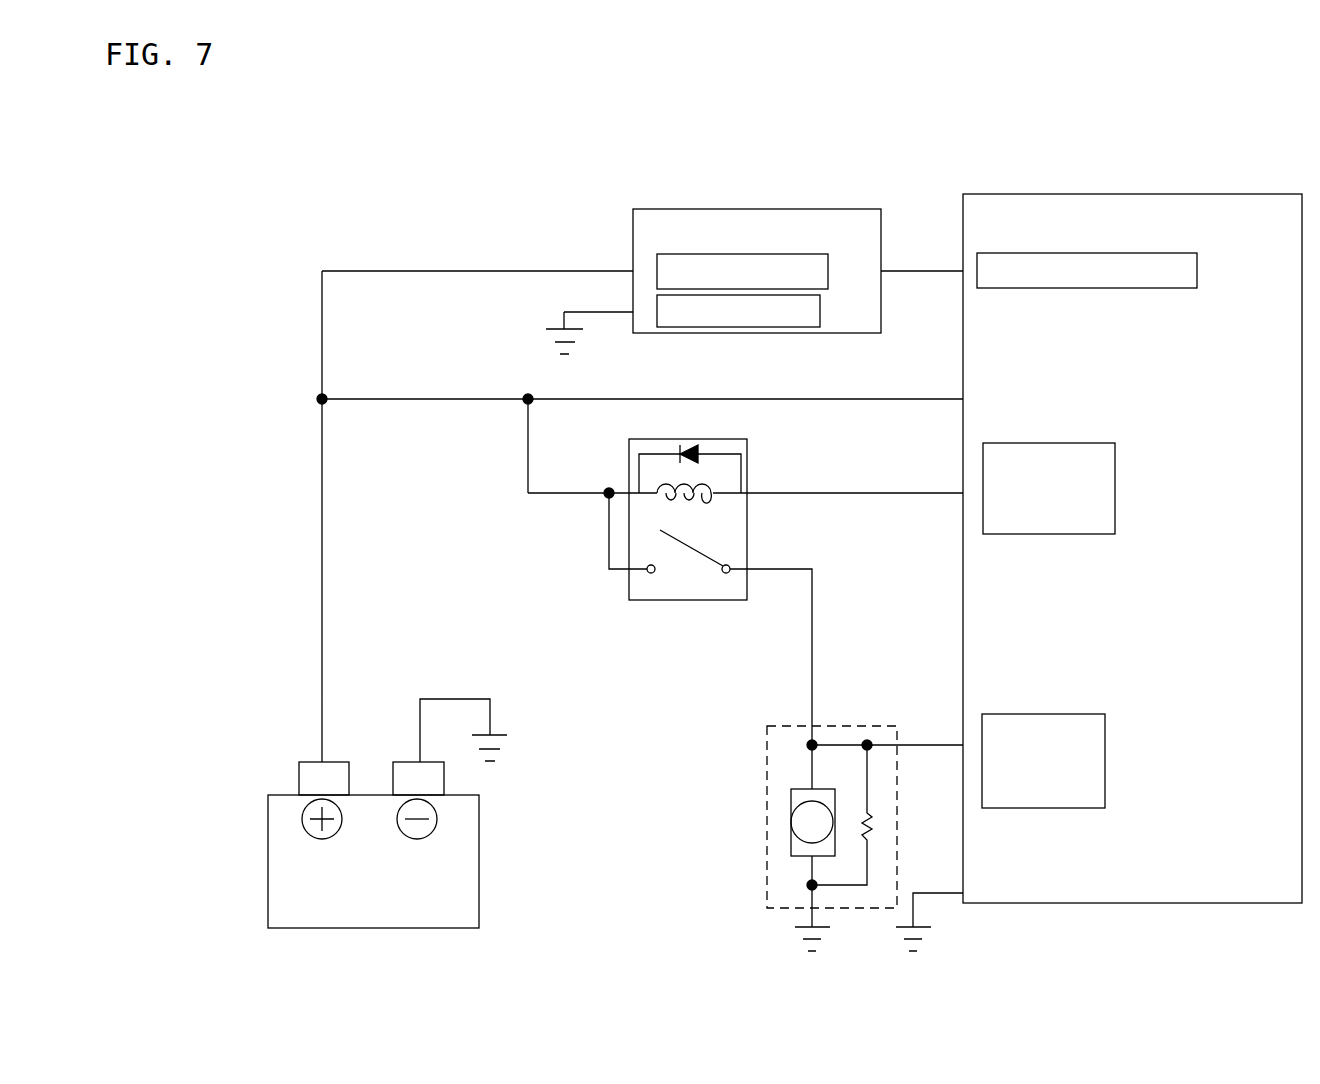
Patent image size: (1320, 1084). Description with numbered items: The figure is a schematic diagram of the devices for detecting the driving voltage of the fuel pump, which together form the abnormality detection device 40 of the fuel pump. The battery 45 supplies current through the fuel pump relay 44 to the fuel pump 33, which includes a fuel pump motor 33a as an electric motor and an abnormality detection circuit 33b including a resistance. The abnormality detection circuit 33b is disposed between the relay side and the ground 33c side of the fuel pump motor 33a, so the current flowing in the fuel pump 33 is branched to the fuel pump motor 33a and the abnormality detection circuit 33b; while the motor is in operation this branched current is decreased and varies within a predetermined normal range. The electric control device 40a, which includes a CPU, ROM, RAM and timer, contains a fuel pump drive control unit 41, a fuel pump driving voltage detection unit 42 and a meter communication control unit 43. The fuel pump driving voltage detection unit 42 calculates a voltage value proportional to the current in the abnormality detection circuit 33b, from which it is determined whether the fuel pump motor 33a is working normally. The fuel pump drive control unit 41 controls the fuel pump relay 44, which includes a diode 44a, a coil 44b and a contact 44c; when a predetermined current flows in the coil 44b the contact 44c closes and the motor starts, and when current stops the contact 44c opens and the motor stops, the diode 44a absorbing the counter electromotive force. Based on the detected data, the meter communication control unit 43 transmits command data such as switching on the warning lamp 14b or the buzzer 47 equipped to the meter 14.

The meter 14 is at (803, 213).
The warning lamp 14b is at (808, 256).
The buzzer 47 is at (822, 312).
The abnormality detection device 40 is at (1105, 554).
The electric control device 40a is at (1166, 195).
The meter communication control unit 43 is at (1112, 253).
The fuel pump drive control unit 41 is at (1072, 443).
The fuel pump driving voltage detection unit 42 is at (1067, 714).
The fuel pump relay 44 is at (694, 509).
The diode 44a is at (690, 446).
The coil 44b is at (687, 499).
The contact 44c is at (691, 546).
The fuel pump 33 is at (858, 838).
The fuel pump motor 33a is at (815, 791).
The abnormality detection circuit 33b is at (871, 861).
The ground 33c is at (818, 927).
The battery 45 is at (455, 795).